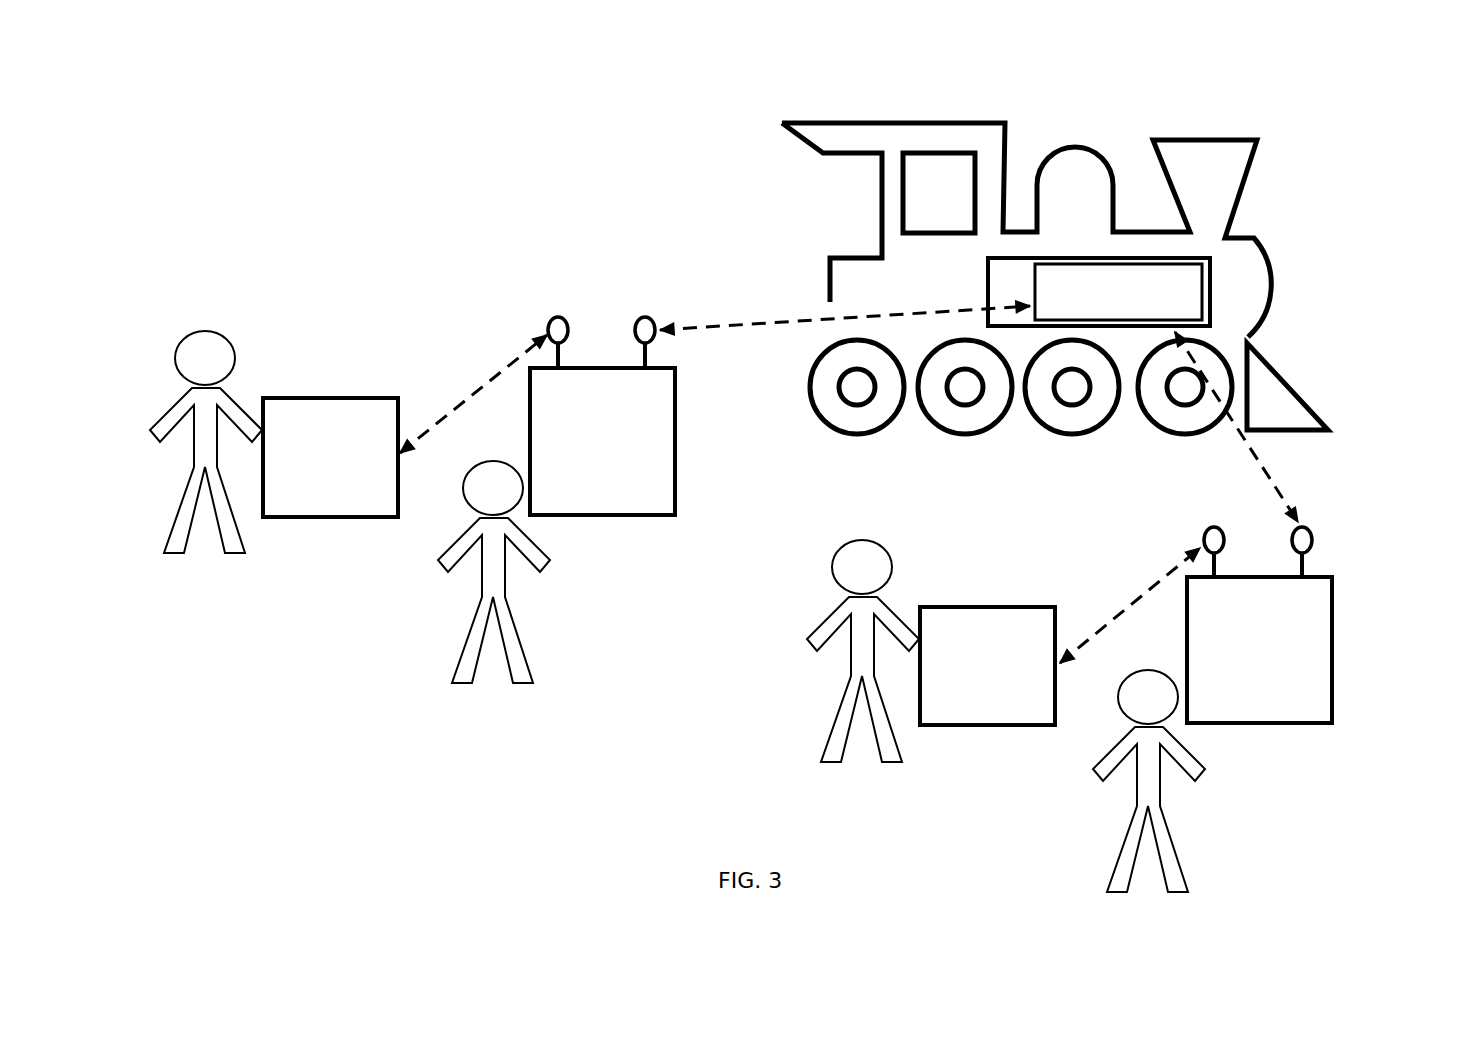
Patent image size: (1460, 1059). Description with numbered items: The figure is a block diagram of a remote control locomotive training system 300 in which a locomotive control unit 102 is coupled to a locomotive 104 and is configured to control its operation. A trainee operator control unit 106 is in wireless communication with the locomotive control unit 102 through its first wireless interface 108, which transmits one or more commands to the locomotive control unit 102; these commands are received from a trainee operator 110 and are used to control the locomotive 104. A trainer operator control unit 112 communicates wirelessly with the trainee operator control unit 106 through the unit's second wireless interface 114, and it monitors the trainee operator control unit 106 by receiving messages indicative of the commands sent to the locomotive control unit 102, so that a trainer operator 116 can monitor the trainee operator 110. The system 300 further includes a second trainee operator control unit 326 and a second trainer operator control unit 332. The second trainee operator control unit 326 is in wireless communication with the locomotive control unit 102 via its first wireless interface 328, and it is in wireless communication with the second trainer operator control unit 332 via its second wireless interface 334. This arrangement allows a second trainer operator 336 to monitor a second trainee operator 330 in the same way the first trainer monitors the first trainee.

The system 300 is at (415, 88).
The locomotive 104 is at (850, 122).
The locomotive control unit 102 is at (1208, 287).
The trainer operator 116 is at (178, 402).
The trainer operator control unit 112 is at (317, 402).
The trainee operator control unit 106 is at (603, 368).
The second wireless interface 114 is at (550, 323).
The first wireless interface 108 is at (653, 320).
The trainee operator 110 is at (527, 587).
The second trainer operator 336 is at (835, 608).
The second trainer operator control unit 332 is at (973, 607).
The second wireless interface 334 is at (1207, 532).
The first wireless interface 328 is at (1310, 532).
The second trainee operator control unit 326 is at (1332, 650).
The second trainee operator 330 is at (1182, 795).